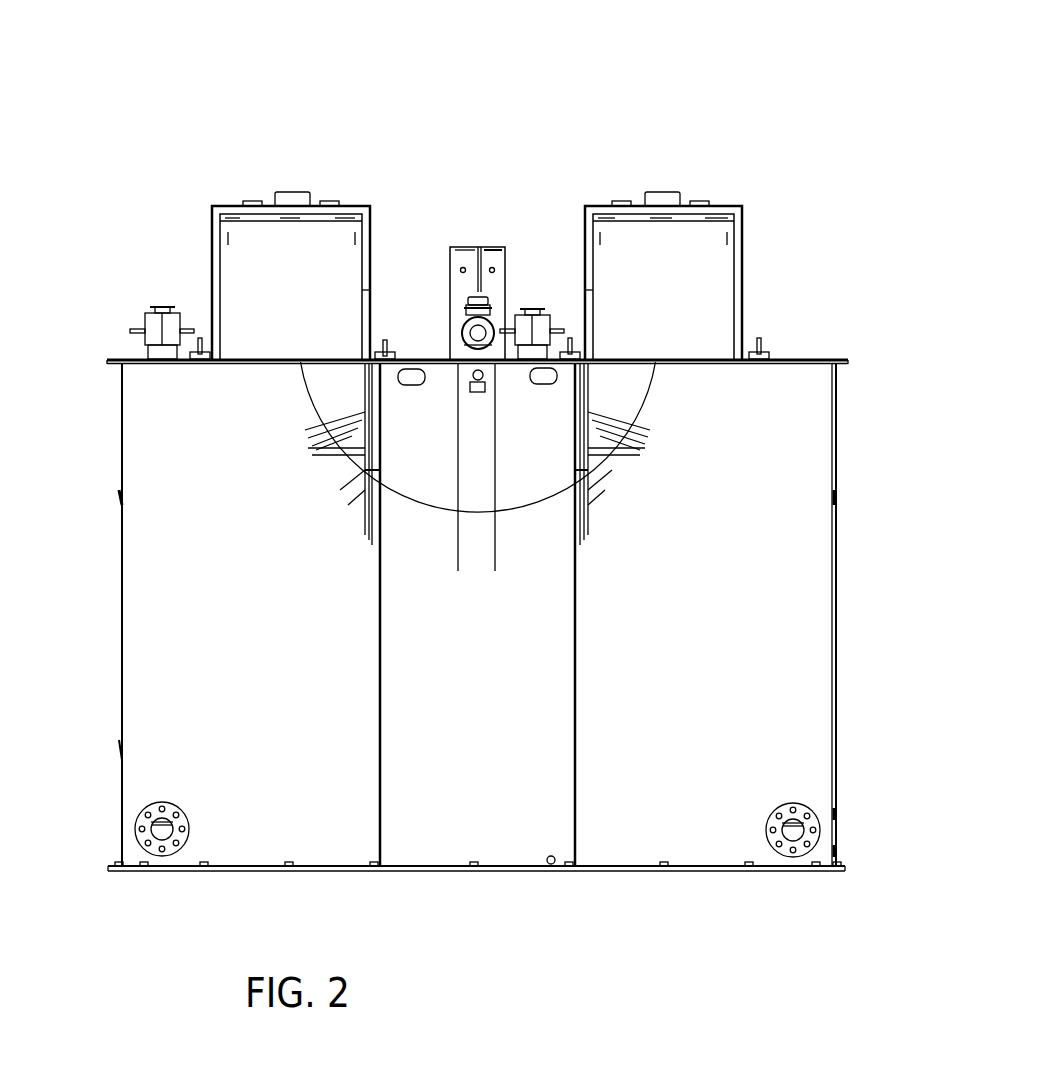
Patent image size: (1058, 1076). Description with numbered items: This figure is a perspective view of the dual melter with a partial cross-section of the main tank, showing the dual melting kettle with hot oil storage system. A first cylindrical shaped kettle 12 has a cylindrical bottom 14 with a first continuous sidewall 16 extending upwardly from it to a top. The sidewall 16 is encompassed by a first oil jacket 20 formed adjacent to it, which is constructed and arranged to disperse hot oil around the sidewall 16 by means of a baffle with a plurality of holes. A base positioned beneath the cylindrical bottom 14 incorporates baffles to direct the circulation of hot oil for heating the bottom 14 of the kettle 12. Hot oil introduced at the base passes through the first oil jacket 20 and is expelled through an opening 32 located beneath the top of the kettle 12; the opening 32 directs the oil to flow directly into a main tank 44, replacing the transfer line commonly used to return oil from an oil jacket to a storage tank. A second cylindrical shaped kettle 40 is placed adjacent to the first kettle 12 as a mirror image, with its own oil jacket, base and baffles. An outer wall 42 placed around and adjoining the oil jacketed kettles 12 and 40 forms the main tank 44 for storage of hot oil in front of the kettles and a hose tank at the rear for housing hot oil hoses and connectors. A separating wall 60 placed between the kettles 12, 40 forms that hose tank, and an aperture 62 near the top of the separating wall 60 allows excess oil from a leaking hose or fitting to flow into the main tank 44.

The first cylindrical shaped kettle 12 is at (862, 604).
The cylindrical bottom 14 is at (772, 871).
The first continuous sidewall 16 is at (630, 385).
The first oil jacket 20 is at (578, 520).
The opening 32 is at (557, 376).
The second cylindrical shaped kettle 40 is at (95, 623).
The outer wall 42 is at (808, 730).
The main tank 44 is at (442, 387).
The separating wall 60 is at (475, 445).
The aperture 62 is at (492, 385).